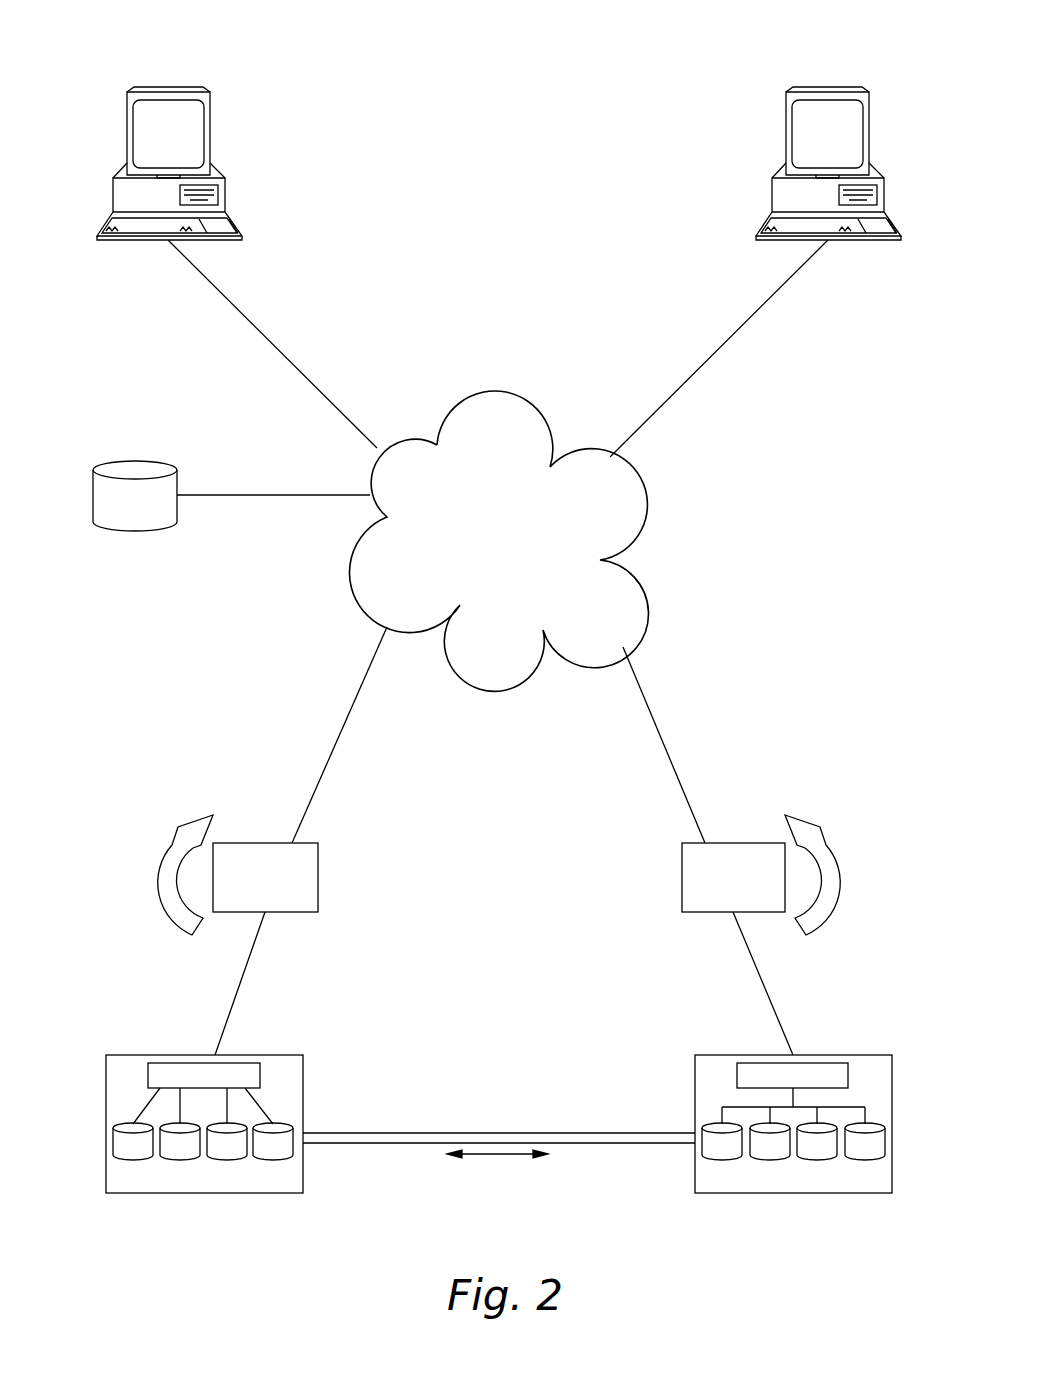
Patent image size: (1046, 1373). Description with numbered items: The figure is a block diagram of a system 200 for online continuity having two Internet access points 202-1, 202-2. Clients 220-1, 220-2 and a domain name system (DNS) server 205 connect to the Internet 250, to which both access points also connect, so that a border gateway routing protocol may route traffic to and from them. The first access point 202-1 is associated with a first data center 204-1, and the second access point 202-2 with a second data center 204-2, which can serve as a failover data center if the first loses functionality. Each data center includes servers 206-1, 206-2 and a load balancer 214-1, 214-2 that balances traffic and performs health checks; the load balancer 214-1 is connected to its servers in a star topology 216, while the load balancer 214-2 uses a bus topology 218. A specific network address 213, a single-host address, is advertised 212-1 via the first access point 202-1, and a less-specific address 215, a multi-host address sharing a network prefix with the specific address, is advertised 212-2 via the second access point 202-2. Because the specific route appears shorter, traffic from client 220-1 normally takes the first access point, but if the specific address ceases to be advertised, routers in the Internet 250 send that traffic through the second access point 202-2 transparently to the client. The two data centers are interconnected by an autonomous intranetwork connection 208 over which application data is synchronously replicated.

The system for online continuity 200 is at (418, 90).
The client 220-1 is at (170, 92).
The client 220-2 is at (829, 92).
The Internet 250 is at (484, 392).
The domain name system (DNS) server 205 is at (133, 457).
The first access point 202-1 is at (262, 845).
The second access point 202-2 is at (731, 845).
The specific network address 213 is at (148, 742).
The less-specific network address 215 is at (836, 742).
The advertisement of specific network address 212-1 is at (158, 878).
The advertisement of less-specific network address 212-2 is at (840, 877).
The first data center 204-1 is at (262, 1055).
The second data center 204-2 is at (850, 1055).
The load balancer 214-1 is at (166, 1063).
The load balancer 214-2 is at (756, 1063).
The star topology 216 is at (259, 1106).
The bus topology 218 is at (735, 1103).
The servers 206-1 is at (283, 1168).
The servers 206-2 is at (715, 1168).
The autonomous intranetwork connection 208 is at (498, 1131).